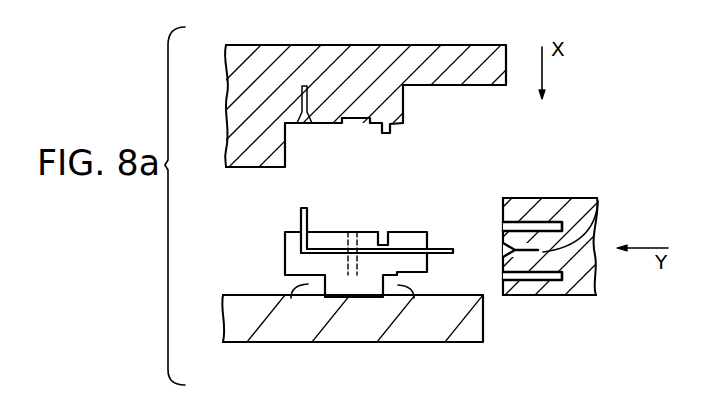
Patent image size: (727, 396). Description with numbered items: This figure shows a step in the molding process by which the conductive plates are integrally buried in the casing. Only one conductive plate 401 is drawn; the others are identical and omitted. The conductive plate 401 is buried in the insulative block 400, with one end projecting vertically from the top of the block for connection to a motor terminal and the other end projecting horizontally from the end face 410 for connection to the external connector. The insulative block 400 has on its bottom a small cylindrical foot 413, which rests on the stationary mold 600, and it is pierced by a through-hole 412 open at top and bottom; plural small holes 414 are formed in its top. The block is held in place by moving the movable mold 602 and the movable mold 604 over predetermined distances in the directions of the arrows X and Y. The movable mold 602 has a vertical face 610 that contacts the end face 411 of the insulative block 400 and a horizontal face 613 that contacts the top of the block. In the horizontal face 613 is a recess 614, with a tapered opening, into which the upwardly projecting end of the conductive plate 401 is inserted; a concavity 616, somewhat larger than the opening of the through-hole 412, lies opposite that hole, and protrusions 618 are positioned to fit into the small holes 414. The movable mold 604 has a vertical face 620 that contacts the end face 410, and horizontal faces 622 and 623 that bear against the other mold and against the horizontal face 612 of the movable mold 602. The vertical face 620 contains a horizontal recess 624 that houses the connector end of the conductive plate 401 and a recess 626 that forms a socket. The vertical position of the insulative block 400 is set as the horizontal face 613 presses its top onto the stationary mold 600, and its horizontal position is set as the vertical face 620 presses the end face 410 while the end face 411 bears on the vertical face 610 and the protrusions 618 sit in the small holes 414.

The movable mold 602 is at (469, 52).
The horizontal face 612 is at (467, 87).
The protrusions 618 is at (400, 131).
The concavity 616 is at (358, 124).
The horizontal face 613 is at (332, 124).
The vertical face 610 is at (288, 165).
The recess 614 is at (303, 86).
The stationary mold 600 is at (340, 322).
The insulative block 400 is at (285, 267).
The end face 411 is at (283, 243).
The small holes 414 is at (383, 232).
The conductive plate 401 is at (308, 225).
The end face 410 is at (427, 265).
The through-hole 412 is at (353, 233).
The foot 413 is at (291, 298).
The movable mold 604 is at (592, 272).
The horizontal face 622 is at (537, 200).
The horizontal face 623 is at (568, 297).
The horizontal recess 624 is at (598, 200).
The vertical face 620 is at (500, 230).
The recess 626 is at (540, 280).